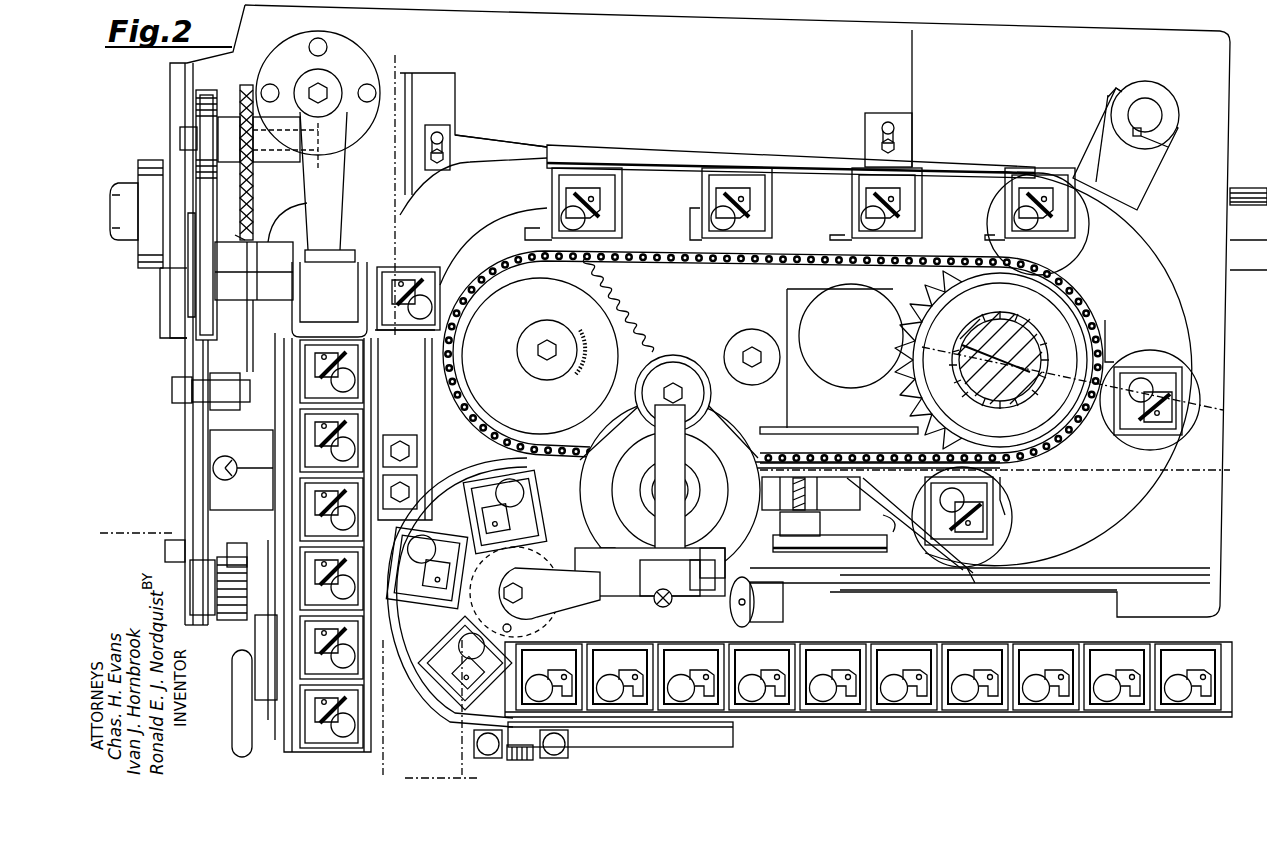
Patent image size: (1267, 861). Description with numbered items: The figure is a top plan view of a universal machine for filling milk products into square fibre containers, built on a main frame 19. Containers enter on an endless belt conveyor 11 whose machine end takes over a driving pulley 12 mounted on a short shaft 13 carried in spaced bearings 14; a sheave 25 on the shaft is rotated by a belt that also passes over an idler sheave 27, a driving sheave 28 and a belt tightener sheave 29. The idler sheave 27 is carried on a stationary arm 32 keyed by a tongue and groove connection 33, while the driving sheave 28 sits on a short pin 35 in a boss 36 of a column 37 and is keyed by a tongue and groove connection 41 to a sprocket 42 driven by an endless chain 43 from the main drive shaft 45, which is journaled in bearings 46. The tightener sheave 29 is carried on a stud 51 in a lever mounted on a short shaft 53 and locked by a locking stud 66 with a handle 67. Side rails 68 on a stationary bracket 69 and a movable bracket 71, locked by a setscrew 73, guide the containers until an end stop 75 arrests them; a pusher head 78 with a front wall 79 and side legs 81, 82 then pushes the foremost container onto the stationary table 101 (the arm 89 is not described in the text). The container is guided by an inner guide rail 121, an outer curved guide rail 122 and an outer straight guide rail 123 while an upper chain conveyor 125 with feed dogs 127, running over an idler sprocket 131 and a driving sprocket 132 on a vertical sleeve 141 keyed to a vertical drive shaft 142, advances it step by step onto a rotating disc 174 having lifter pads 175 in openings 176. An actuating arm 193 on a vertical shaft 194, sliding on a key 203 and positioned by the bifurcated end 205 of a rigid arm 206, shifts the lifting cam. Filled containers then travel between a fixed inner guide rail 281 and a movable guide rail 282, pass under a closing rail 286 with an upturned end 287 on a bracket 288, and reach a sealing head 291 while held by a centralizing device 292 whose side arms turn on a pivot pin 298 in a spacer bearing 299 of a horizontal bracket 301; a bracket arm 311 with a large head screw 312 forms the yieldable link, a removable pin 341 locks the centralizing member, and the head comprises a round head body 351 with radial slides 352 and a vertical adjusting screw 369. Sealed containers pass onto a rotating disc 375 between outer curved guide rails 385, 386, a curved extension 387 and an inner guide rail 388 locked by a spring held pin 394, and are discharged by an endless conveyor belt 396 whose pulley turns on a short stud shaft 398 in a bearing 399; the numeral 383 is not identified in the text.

The endless belt conveyor 11 is at (325, 755).
The driving pulley 12 is at (295, 230).
The short shaft 13 is at (187, 270).
The spaced bearings 14 is at (262, 300).
The main frame 19 is at (700, 311).
The sheave 25 is at (189, 300).
The idler sheave 27 is at (192, 386).
The driving sheave 28 is at (197, 95).
The belt tightener sheave 29 is at (183, 540).
The stationary arm 32 is at (247, 350).
The tongue and groove connection 33 is at (242, 283).
The short pin 35 is at (322, 160).
The boss 36 is at (285, 162).
The column 37 is at (345, 57).
The tongue and groove connection 41 is at (231, 117).
The sprocket 42 is at (247, 85).
The endless chain 43 is at (240, 228).
The drive shaft 45 is at (130, 195).
The bearings 46 is at (150, 185).
The stud 51 is at (186, 570).
The short shaft 53 is at (222, 600).
The locking stud 66 is at (240, 670).
The handle 67 is at (232, 748).
The side rails 68 is at (280, 398).
The vertical stationary bracket 69 is at (432, 448).
The movable bracket 71 is at (233, 564).
The setscrew 73 is at (236, 460).
The end stop 75 is at (352, 262).
The pusher head 78 is at (400, 280).
The front wall 79 is at (334, 332).
The side leg 81 is at (385, 295).
The side leg 82 is at (264, 336).
The arm 89 is at (323, 181).
The stationary table 101 is at (506, 185).
The inner curved and straight guide rail 121 is at (498, 262).
The outer curved guide rail 122 is at (470, 170).
The outer straight guide rail 123 is at (795, 152).
The upper endless chain conveyor 125 is at (705, 265).
The feed dogs 127 is at (548, 226).
The idler sprocket 131 is at (621, 356).
The driving sprocket 132 is at (960, 298).
The vertical sleeve 141 is at (1040, 346).
The vertical drive shaft 142 is at (1012, 345).
The rotating disc 174 is at (1158, 248).
The lifter pad 175 is at (1048, 172).
The openings 176 is at (1084, 266).
The actuating arm 193 is at (1125, 149).
The vertical shaft 194 is at (1152, 112).
The feather or key 203 is at (1160, 135).
The bifurcated end 205 is at (1110, 93).
The rigid arm 206 is at (1098, 158).
The fixed inner guide rail 281 is at (835, 428).
The movable guide rail 282 is at (937, 578).
The closure element closing rail 286 is at (830, 538).
The upturned end 287 is at (895, 545).
The bracket 288 is at (806, 497).
The sealing head 291 is at (830, 551).
The centralizing device 292 is at (692, 608).
The pivot pin 298 is at (715, 565).
The spacer bearing 299 is at (687, 500).
The horizontal bracket 301 is at (718, 435).
The bracket arm 311 is at (652, 500).
The large head screw 312 is at (666, 607).
The removable pin 341 is at (588, 545).
The round head body 351 is at (708, 478).
The radial slides 352 is at (613, 549).
The vertical adjusting screw 369 is at (668, 480).
The rotating disc 375 is at (466, 539).
The pin 383 is at (236, 543).
The outer curved guide rail 385 is at (400, 524).
The outer curved guide rail 386 is at (445, 658).
The curved extension 387 is at (545, 548).
The inner guide rail 388 is at (578, 628).
The spring held pin 394 is at (748, 604).
The endless conveyor belt 396 is at (1228, 662).
The short stud shaft 398 is at (515, 766).
The bearing 399 is at (525, 758).